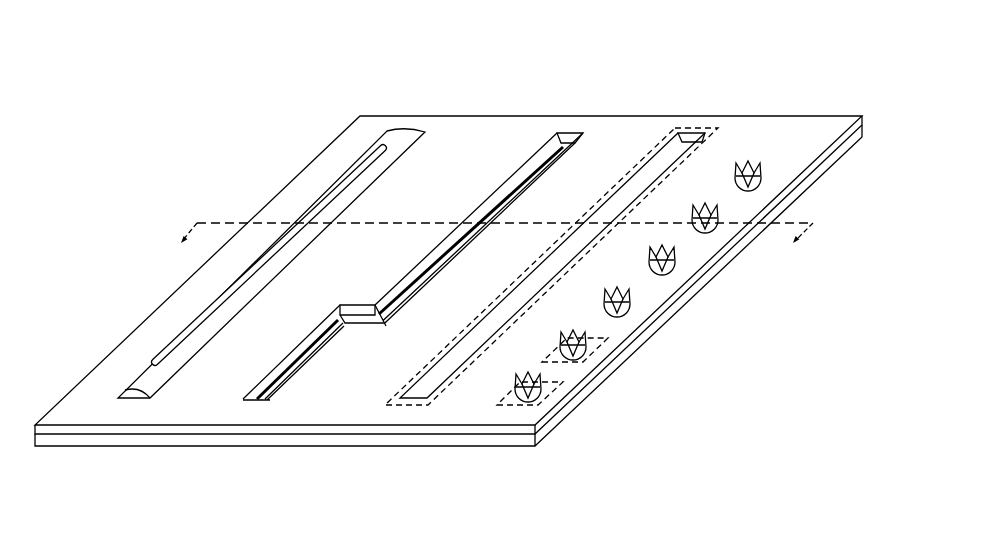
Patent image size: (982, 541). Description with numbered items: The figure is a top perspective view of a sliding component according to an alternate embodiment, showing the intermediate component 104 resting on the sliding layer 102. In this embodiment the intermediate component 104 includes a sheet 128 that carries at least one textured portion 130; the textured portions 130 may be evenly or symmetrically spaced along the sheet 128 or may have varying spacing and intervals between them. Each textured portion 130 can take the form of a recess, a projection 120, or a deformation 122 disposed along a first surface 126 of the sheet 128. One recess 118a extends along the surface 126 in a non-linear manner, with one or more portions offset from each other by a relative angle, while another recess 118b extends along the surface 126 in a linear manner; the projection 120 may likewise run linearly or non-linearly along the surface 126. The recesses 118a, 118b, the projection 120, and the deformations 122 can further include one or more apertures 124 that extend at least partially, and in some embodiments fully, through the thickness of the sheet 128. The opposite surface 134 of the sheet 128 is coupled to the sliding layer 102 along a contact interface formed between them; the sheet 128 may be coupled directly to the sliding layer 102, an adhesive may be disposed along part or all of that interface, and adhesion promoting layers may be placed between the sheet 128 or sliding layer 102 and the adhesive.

The sliding layer 102 is at (865, 150).
The intermediate component 104 is at (287, 63).
The recess 118a is at (567, 135).
The recess 118b is at (690, 138).
The projection 120 is at (388, 137).
The deformation 122 is at (762, 185).
The aperture 124 is at (312, 207).
The surface 126 is at (798, 155).
The sheet 128 is at (657, 311).
The textured portion 130 is at (402, 407).
The surface 134 is at (460, 442).